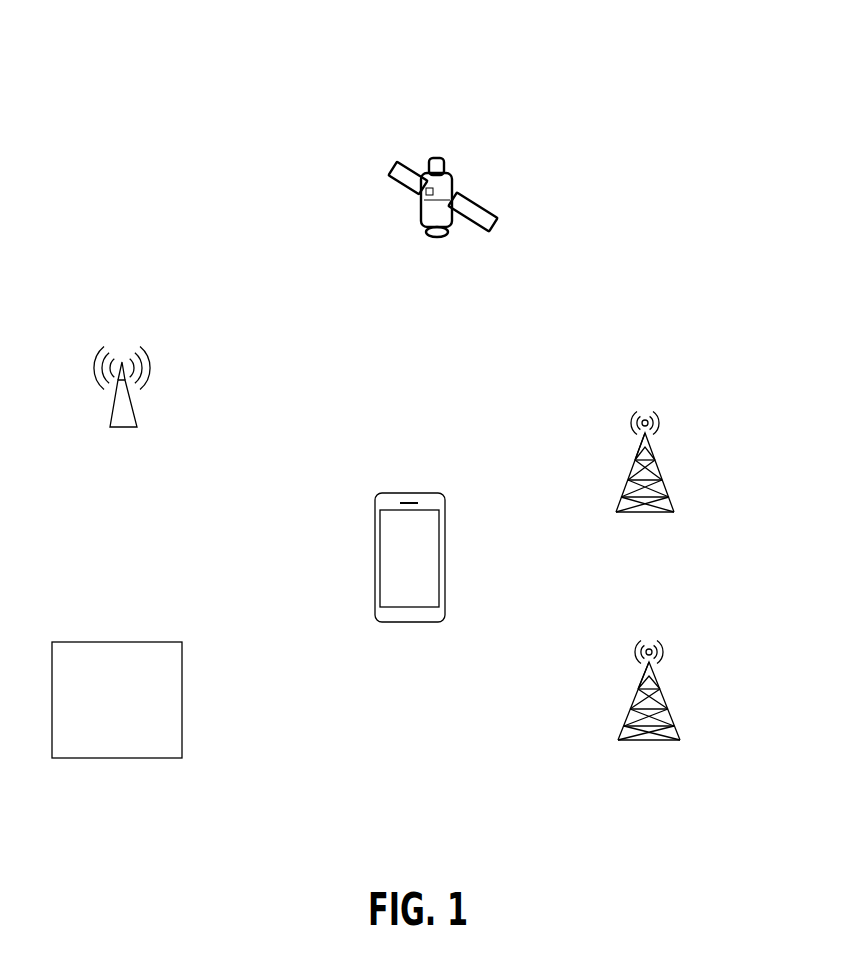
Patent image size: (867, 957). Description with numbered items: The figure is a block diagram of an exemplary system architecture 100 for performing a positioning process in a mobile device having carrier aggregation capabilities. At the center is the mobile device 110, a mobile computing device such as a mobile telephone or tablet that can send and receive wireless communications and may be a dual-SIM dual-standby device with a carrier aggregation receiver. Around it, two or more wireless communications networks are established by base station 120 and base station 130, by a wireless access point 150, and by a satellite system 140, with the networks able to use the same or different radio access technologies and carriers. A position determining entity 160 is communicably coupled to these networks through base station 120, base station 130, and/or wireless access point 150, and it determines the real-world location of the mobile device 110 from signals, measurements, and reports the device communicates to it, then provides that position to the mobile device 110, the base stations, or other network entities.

The system architecture 100 is at (726, 59).
The mobile device 110 is at (397, 573).
The base station 120 is at (672, 713).
The base station 130 is at (668, 487).
The satellite system 140 is at (497, 220).
The wireless access point 150 is at (133, 412).
The position determining entity 160 is at (130, 741).